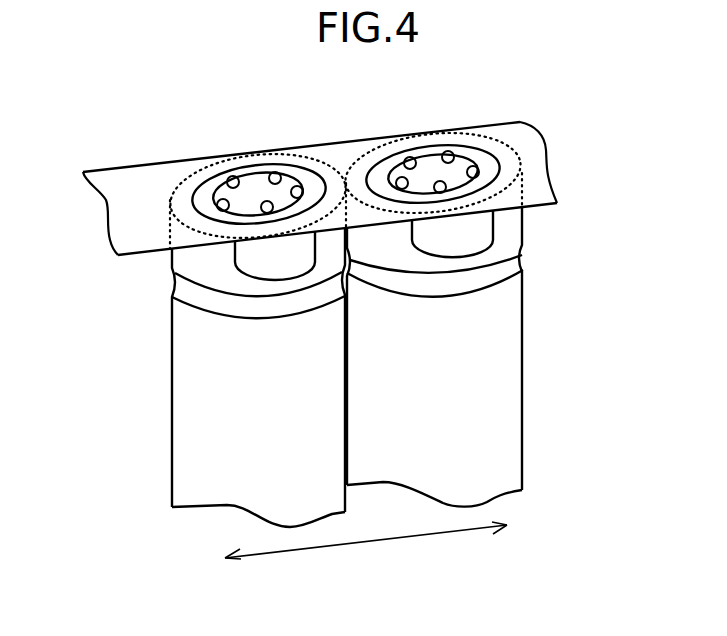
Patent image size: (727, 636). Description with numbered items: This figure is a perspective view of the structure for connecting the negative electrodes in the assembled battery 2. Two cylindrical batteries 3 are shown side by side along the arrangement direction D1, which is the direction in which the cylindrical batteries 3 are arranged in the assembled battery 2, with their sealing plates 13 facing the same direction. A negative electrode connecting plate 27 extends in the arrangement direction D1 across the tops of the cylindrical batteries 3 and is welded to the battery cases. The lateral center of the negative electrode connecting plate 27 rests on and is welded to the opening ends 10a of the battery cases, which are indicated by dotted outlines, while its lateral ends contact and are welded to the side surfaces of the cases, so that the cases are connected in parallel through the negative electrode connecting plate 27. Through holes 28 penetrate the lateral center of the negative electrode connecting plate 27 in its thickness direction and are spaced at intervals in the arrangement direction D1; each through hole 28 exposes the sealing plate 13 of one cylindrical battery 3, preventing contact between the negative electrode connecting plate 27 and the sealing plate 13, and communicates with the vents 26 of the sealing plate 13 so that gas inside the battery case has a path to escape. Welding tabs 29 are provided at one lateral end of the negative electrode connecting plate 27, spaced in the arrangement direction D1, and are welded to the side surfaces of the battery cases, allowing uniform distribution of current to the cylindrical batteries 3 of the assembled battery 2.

The assembled battery 2 is at (132, 328).
The cylindrical battery 3 is at (183, 398).
The sealing plate 13 is at (258, 190).
The vent 26 is at (233, 178).
The negative electrode connecting plate 27 is at (157, 165).
The through hole 28 is at (253, 163).
The welding tab 29 is at (262, 262).
The opening end 10a is at (173, 201).
The arrangement direction D1 is at (370, 542).